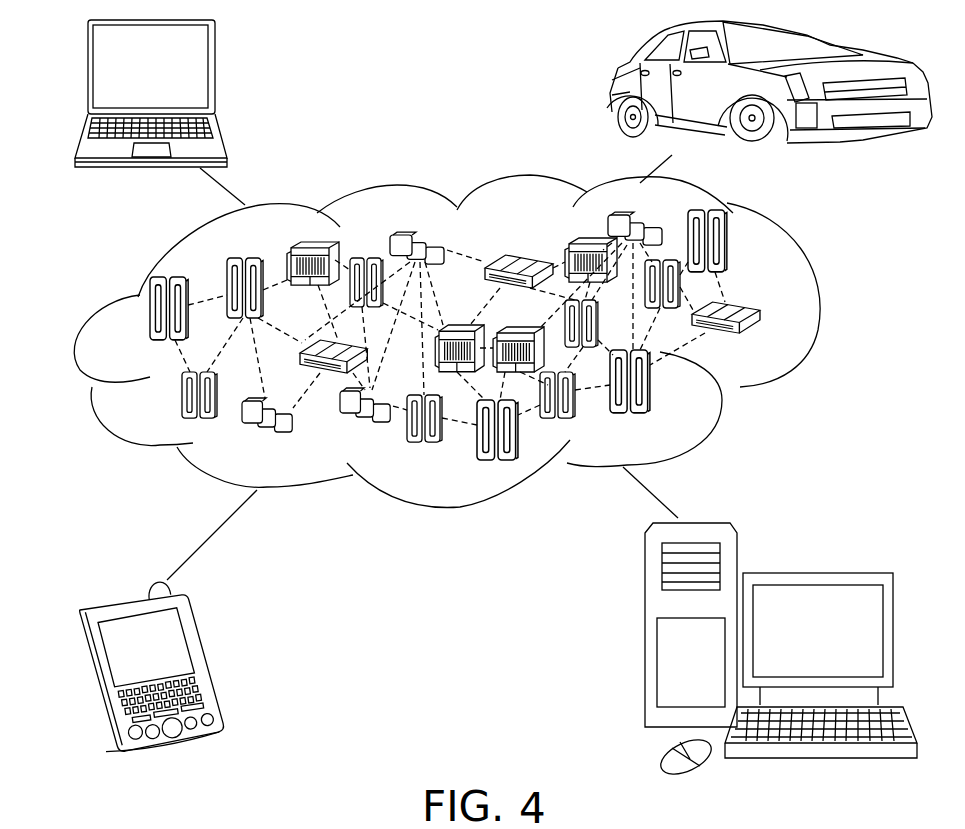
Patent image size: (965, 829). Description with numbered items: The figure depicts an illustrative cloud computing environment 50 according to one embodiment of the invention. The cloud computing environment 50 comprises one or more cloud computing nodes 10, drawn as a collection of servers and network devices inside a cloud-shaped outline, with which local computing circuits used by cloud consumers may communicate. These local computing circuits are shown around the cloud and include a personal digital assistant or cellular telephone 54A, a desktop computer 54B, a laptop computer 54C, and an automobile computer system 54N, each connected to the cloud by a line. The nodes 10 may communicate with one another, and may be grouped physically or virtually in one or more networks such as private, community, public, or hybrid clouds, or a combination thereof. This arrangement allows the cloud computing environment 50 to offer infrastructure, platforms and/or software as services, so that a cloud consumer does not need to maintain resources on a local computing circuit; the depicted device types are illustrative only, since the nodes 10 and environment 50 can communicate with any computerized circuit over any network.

The laptop computer 54C is at (215, 72).
The automobile computer system 54N is at (612, 88).
The cloud computing environment 50 is at (817, 316).
The cloud computing node 10 is at (763, 344).
The personal digital assistant or cellular telephone 54A is at (205, 659).
The desktop computer 54B is at (817, 572).